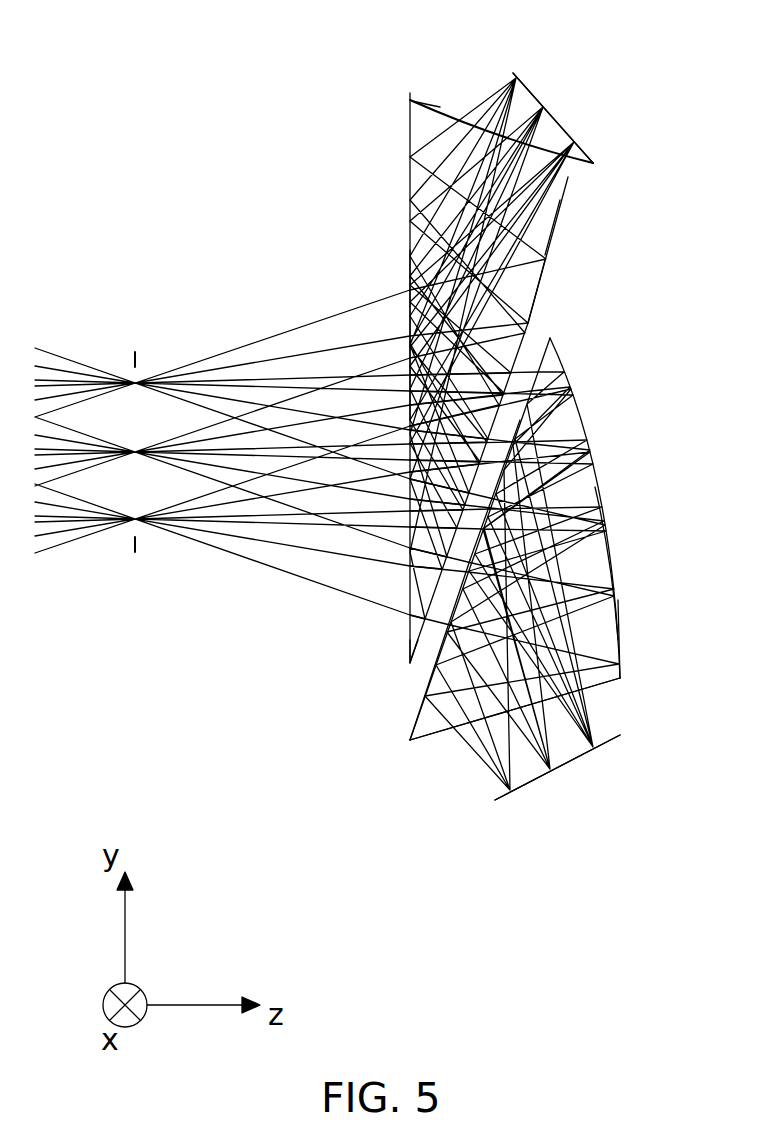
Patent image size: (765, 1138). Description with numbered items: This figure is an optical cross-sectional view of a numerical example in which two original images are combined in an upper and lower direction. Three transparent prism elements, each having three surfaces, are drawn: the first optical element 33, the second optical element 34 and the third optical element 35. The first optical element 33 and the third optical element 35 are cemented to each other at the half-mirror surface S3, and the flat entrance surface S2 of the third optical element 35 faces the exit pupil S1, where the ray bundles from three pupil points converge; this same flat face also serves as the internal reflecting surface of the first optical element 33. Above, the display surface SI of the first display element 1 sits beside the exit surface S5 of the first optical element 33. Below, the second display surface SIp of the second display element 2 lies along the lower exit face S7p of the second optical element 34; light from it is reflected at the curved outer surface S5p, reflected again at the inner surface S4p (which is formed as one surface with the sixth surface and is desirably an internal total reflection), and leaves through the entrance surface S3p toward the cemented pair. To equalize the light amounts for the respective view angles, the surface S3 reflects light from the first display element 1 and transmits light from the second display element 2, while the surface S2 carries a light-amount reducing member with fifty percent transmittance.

The first display element 1 is at (565, 128).
The second display element 2 is at (548, 769).
The first optical element 33 is at (547, 291).
The second optical element 34 is at (617, 613).
The third optical element 35 is at (406, 641).
The exit pupil S1 is at (125, 547).
The surface S2 is at (410, 250).
The surface S3 is at (543, 298).
The surface S5 is at (435, 105).
The surface SI is at (543, 100).
The surface S3' S3p is at (433, 615).
The surface S4' S4p is at (413, 723).
The surface S5' S5p is at (607, 522).
The surface S7' S7p is at (475, 727).
The surface SI' SIp is at (522, 790).